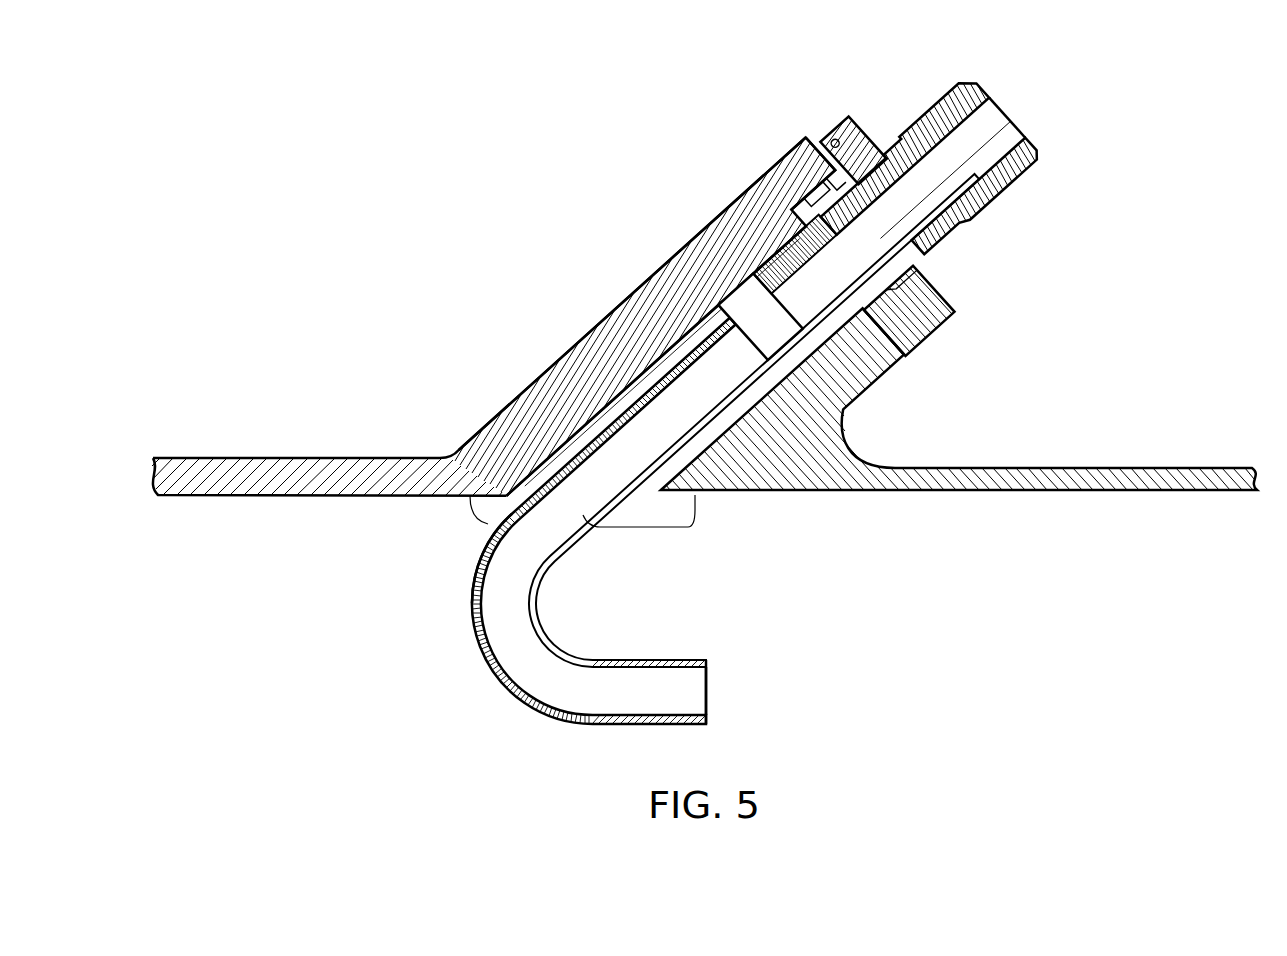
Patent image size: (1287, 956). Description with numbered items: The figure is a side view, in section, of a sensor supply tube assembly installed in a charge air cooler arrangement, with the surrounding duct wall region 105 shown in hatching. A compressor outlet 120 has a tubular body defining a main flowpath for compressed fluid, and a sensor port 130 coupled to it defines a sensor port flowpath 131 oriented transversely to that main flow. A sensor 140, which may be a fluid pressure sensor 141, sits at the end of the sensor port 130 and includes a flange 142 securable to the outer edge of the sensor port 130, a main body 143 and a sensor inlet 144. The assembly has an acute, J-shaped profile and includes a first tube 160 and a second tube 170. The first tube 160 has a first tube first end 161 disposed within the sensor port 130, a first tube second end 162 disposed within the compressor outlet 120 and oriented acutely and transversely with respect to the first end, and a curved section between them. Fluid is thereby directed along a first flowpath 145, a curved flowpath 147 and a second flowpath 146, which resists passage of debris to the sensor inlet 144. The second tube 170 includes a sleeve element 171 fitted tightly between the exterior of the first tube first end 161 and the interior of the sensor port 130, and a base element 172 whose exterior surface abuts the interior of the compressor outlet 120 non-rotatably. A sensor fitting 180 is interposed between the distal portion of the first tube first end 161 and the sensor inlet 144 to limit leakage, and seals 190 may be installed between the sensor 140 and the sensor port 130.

The panel collar 105 is at (722, 430).
The compressor outlet 120 is at (232, 465).
The sensor port 130 is at (663, 287).
The sensor port flowpath 131 is at (798, 221).
The sensor 140 is at (985, 155).
The fluid pressure sensor 141 is at (1002, 118).
The flange 142 is at (843, 137).
The main body 143 is at (907, 213).
The sensor inlet 144 is at (810, 298).
The first flowpath 145 is at (612, 460).
The second flowpath 146 is at (709, 697).
The curved flowpath 147 is at (500, 636).
The first tube 160 is at (701, 449).
The first tube first end 161 is at (687, 387).
The first tube second end 162 is at (636, 680).
The second tube 170 is at (698, 505).
The sleeve element 171 is at (590, 428).
The base element 172 is at (472, 516).
The sensor fitting 180 is at (728, 318).
The seals 190 is at (795, 165).